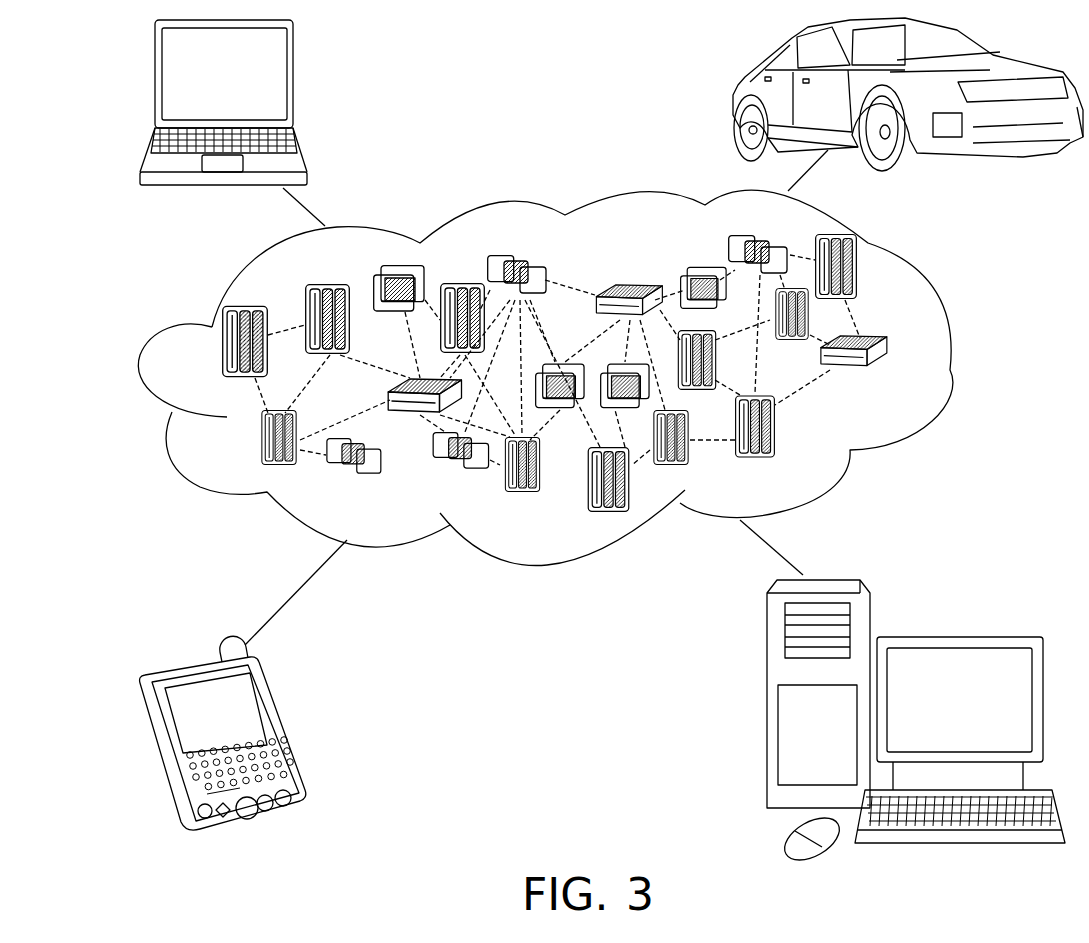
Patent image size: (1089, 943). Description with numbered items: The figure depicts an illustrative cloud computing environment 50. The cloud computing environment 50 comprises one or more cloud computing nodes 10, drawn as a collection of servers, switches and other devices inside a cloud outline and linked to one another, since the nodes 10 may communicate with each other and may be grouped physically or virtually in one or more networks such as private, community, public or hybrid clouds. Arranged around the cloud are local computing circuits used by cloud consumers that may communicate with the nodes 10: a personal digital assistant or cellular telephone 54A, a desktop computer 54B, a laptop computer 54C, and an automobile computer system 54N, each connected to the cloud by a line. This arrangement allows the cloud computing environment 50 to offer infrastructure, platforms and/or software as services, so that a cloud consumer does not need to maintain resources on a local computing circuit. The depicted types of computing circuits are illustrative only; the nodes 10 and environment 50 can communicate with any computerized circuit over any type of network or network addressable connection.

The cloud computing node 10 is at (910, 381).
The cloud computing environment 50 is at (958, 356).
The personal digital assistant or cellular telephone 54A is at (282, 730).
The desktop computer 54B is at (957, 635).
The laptop computer 54C is at (293, 82).
The automobile computer system 54N is at (737, 100).